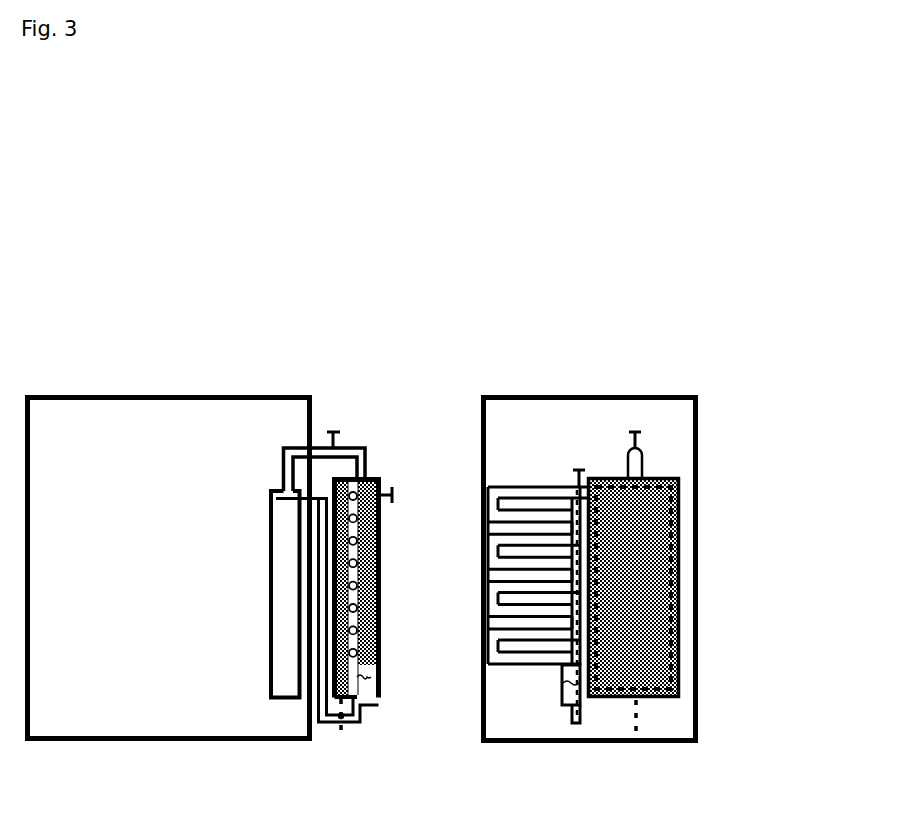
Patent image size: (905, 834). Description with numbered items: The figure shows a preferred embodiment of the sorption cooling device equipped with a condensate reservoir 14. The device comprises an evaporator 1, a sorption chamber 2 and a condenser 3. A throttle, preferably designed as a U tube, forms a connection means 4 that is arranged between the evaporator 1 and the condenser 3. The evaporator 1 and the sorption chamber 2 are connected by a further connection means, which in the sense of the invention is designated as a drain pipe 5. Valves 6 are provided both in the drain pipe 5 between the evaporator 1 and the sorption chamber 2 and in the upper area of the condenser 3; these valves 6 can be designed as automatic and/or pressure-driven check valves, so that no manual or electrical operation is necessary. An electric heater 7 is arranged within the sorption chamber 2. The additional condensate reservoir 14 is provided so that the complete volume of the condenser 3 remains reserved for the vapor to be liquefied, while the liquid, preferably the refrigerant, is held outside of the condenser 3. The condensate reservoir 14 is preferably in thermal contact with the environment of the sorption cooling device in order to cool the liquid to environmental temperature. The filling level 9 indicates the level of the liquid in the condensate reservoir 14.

The evaporator 1 is at (268, 494).
The sorption chamber 2 is at (382, 553).
The condenser 3 is at (382, 580).
The connection means 4 is at (318, 723).
The drain pipe 5 is at (367, 443).
The valve 6 is at (333, 432).
The electric heater 7 is at (341, 733).
The filling level 9 is at (382, 660).
The condensate reservoir 14 is at (344, 716).